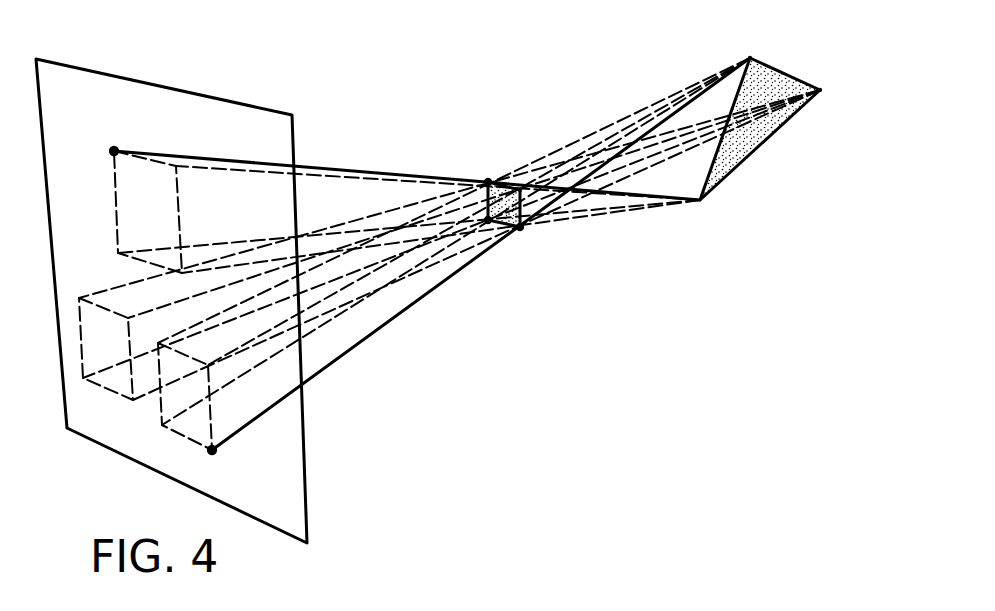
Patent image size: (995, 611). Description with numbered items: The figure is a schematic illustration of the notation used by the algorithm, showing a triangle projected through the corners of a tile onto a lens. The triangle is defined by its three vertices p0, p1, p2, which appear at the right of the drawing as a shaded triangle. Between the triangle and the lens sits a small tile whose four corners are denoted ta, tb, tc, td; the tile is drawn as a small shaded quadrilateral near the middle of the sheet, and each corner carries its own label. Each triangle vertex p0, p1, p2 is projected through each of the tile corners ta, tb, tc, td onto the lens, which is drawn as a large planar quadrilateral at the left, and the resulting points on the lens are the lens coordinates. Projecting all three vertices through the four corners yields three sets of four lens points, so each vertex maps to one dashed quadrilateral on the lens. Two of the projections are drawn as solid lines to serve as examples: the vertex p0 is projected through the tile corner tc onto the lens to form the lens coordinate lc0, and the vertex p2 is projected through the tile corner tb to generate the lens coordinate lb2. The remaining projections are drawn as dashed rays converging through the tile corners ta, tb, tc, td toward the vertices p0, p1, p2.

The lens coordinate lc0 is at (397, 155).
The lens coordinate lb2 is at (479, 274).
The triangle vertex p0 is at (754, 148).
The triangle vertex p1 is at (834, 91).
The triangle vertex p2 is at (755, 42).
The tile corner ta is at (488, 221).
The tile corner tb is at (522, 246).
The tile corner tc is at (490, 167).
The tile corner td is at (520, 190).